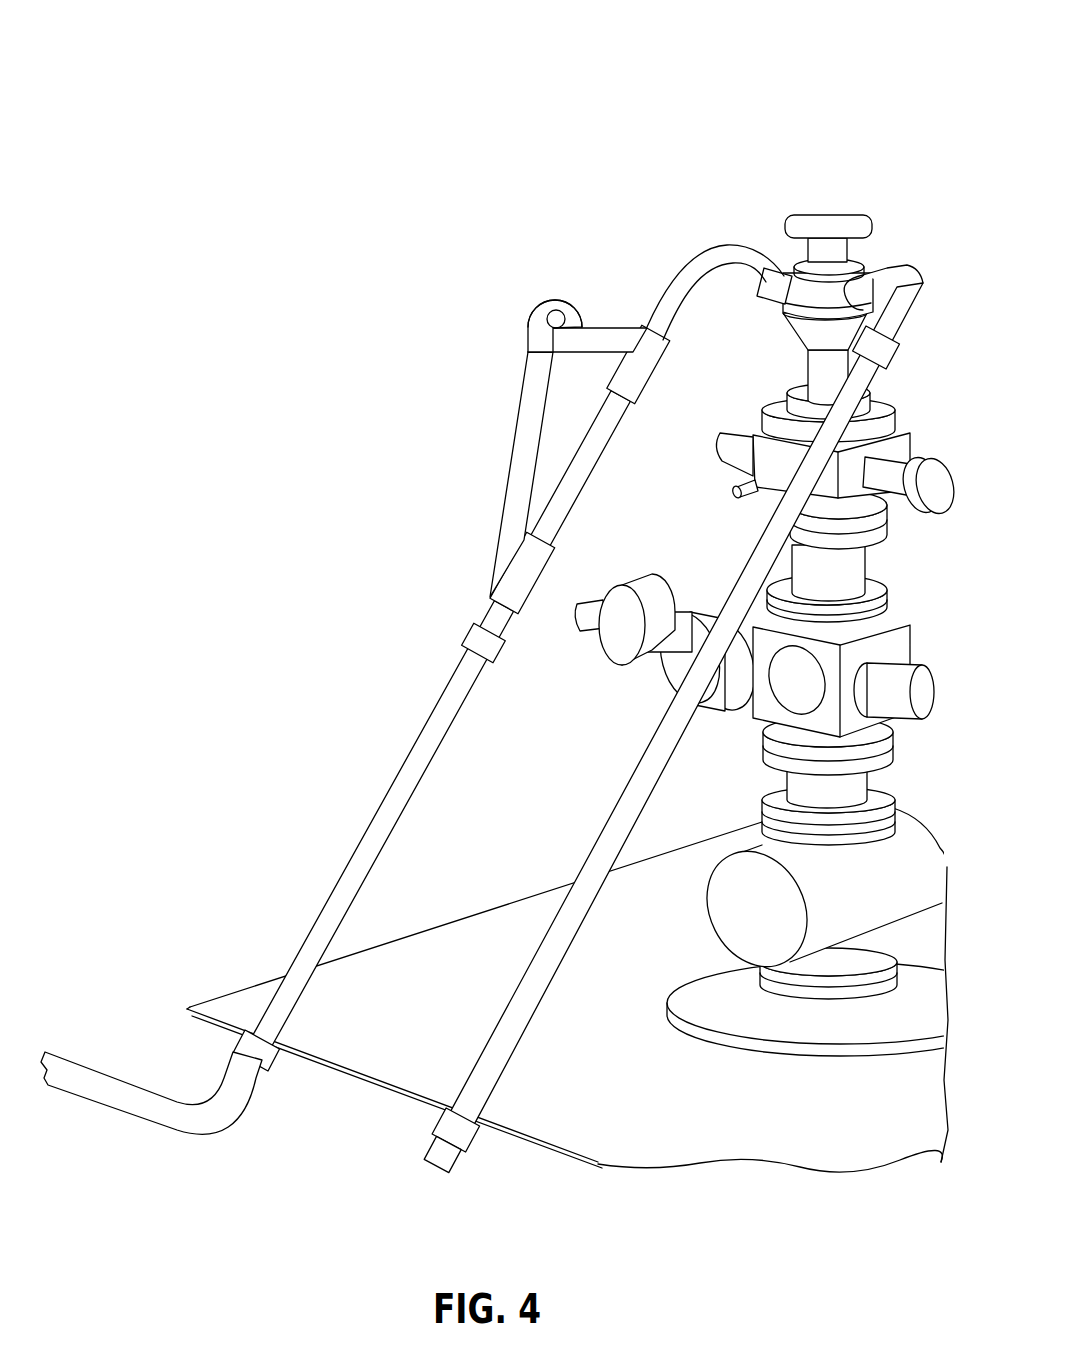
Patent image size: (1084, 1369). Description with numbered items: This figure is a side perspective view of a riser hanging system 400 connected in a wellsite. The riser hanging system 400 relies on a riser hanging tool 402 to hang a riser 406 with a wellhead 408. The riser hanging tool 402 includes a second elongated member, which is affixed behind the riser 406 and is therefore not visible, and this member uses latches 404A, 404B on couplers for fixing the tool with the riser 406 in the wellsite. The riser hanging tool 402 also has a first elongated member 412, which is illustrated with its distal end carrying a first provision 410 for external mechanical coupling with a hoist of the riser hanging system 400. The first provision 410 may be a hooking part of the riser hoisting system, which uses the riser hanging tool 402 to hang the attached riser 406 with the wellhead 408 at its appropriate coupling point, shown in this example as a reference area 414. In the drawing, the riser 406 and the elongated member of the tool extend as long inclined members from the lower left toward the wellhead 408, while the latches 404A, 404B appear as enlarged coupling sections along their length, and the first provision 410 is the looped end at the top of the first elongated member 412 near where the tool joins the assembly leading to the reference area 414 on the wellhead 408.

The riser hanging system 400 is at (860, 100).
The riser hanging tool 402 is at (518, 333).
The latch 404A is at (644, 326).
The latch 404B is at (492, 570).
The riser 406 is at (444, 712).
The wellhead 408 is at (873, 218).
The first provision 410 is at (550, 300).
The first elongated member 412 is at (500, 428).
The reference area 414 is at (780, 252).